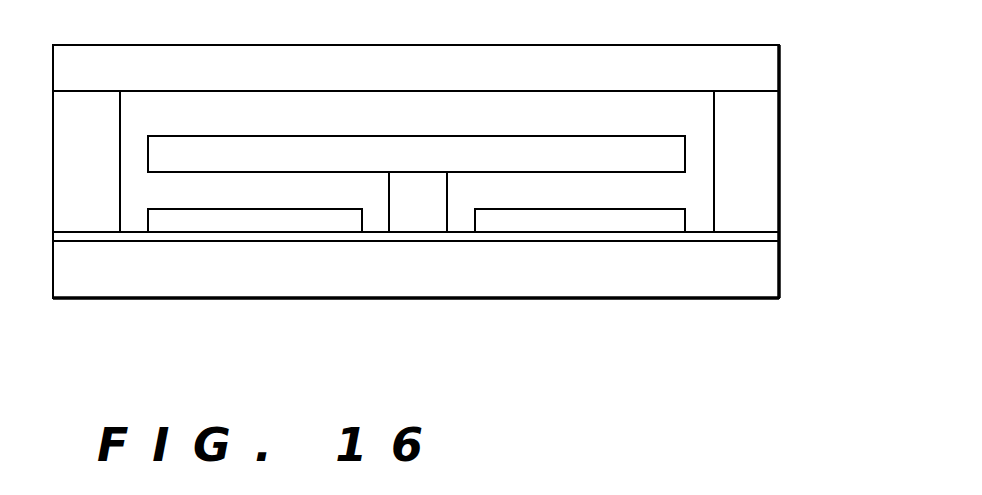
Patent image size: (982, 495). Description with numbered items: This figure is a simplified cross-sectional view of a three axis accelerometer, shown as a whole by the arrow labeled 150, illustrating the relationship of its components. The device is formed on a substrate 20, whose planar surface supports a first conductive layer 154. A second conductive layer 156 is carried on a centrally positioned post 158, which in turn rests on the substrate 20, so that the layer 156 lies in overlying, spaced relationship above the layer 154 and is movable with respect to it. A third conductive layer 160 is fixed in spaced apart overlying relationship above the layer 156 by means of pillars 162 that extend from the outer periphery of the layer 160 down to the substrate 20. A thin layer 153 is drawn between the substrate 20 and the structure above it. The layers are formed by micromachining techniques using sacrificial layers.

The capacitor device 150 is at (120, 354).
The third conductive layer 160 is at (199, 57).
The pillars 162 is at (780, 100).
The second conductive layer 156 is at (418, 142).
The centrally positioned post 158 is at (418, 225).
The first conductive layer 154 is at (590, 207).
The thin insulating layer 153 is at (780, 230).
The substrate 20 is at (612, 290).